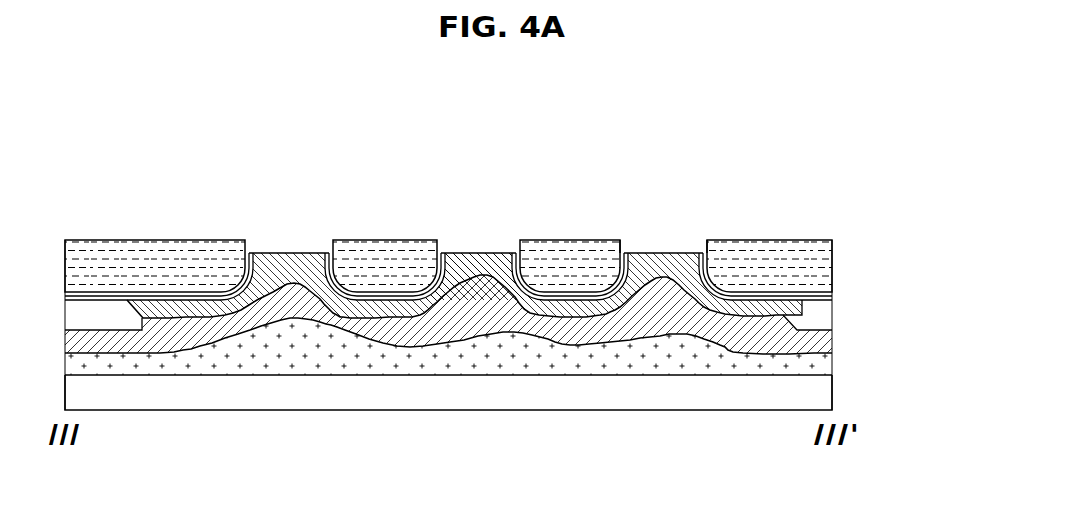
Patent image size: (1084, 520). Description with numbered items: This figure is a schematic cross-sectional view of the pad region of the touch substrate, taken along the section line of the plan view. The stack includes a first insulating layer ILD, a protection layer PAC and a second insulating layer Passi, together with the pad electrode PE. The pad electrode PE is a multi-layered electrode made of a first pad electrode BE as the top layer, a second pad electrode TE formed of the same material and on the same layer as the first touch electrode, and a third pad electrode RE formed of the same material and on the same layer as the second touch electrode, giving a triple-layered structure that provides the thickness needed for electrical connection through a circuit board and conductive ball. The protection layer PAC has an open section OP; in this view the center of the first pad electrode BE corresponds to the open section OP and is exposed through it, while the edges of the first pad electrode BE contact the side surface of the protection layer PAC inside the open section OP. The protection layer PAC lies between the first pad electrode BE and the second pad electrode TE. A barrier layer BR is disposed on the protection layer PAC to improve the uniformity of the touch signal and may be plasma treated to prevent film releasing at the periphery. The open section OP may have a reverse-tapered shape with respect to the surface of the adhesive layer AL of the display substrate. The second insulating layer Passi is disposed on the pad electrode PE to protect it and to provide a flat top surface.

The pad electrode PE is at (476, 196).
The second pad electrode TE is at (455, 254).
The first pad electrode BE is at (487, 276).
The third pad electrode RE is at (500, 268).
The open section OP is at (662, 226).
The protection layer PAC is at (830, 268).
The barrier layer BR is at (832, 297).
The first insulating layer ILD is at (820, 315).
The second insulating layer Passi is at (822, 363).
The adhesive layer AL is at (459, 388).